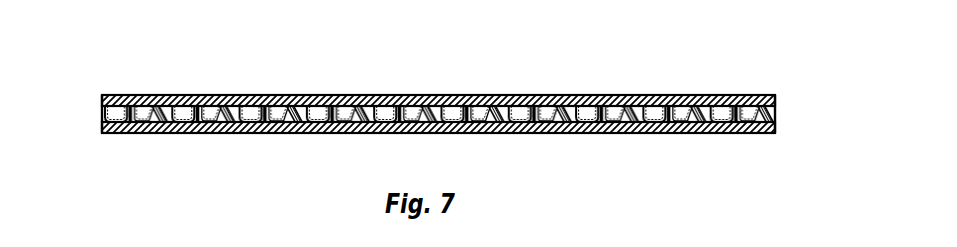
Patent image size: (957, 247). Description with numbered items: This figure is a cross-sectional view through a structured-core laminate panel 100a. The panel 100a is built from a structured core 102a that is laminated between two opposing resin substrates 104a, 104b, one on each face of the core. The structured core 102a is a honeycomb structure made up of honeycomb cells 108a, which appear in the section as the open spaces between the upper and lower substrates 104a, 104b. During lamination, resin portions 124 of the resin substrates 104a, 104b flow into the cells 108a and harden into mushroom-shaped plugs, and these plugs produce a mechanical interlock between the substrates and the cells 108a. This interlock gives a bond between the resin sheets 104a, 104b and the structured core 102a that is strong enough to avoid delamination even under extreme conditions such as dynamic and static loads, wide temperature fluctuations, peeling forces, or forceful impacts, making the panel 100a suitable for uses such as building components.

The structured-core laminate panel 100a is at (739, 49).
The structured core 102a is at (102, 113).
The resin substrate 104a is at (128, 95).
The resin substrate 104b is at (128, 134).
The honeycomb cells 108a is at (750, 116).
The resin portions 124 is at (321, 95).